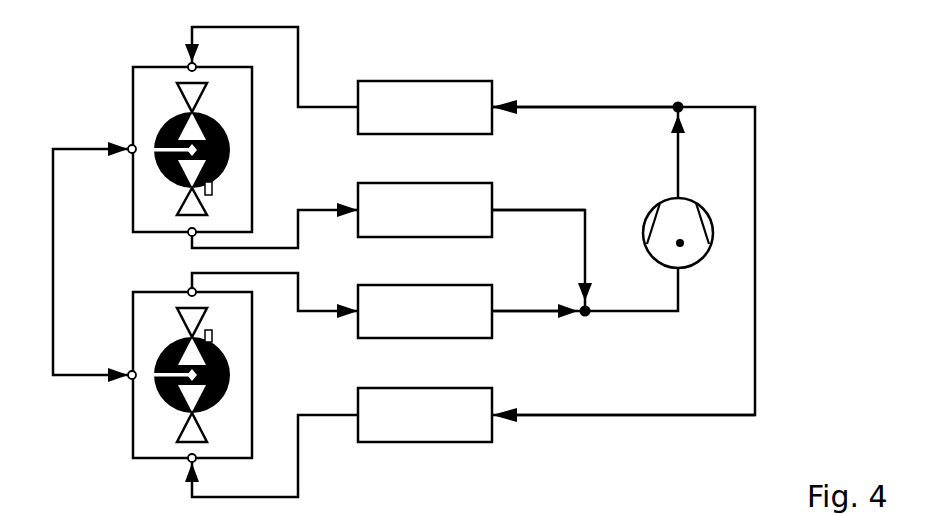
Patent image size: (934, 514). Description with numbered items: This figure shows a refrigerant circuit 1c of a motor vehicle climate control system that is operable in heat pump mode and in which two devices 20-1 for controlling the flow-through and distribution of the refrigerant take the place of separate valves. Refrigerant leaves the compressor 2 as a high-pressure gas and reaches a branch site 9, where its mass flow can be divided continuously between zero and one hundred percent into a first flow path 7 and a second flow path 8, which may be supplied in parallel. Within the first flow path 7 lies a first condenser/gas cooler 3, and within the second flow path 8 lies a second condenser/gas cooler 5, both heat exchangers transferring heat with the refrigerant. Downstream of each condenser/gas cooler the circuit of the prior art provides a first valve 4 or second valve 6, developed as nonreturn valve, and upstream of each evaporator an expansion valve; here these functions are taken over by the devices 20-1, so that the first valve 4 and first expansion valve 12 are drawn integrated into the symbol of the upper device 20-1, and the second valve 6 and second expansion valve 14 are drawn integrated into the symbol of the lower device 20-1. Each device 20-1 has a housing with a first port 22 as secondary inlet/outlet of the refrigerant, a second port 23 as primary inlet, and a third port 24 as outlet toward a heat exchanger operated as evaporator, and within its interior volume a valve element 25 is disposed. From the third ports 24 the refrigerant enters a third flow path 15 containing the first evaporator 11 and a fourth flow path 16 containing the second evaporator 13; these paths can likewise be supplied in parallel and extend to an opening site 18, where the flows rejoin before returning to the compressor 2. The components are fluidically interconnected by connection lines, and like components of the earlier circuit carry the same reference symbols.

The refrigerant circuit 1c is at (832, 71).
The compressor 2 is at (681, 244).
The first condenser/gas cooler 3 is at (417, 119).
The first valve 4 is at (183, 92).
The second condenser/gas cooler 5 is at (417, 427).
The second valve 6 is at (183, 432).
The first flow path 7 is at (582, 108).
The second flow path 8 is at (680, 413).
The branch site 9 is at (683, 110).
The first evaporator 11 is at (411, 222).
The first expansion valve 12 is at (183, 210).
The second evaporator 13 is at (411, 323).
The second expansion valve 14 is at (190, 320).
The third flow path 15 is at (520, 210).
The fourth flow path 16 is at (520, 311).
The opening site 18 is at (588, 315).
The device 20-1 is at (112, 64).
The first port 22 is at (128, 153).
The second port 23 is at (187, 63).
The third port 24 is at (187, 235).
The valve element 25 is at (230, 150).